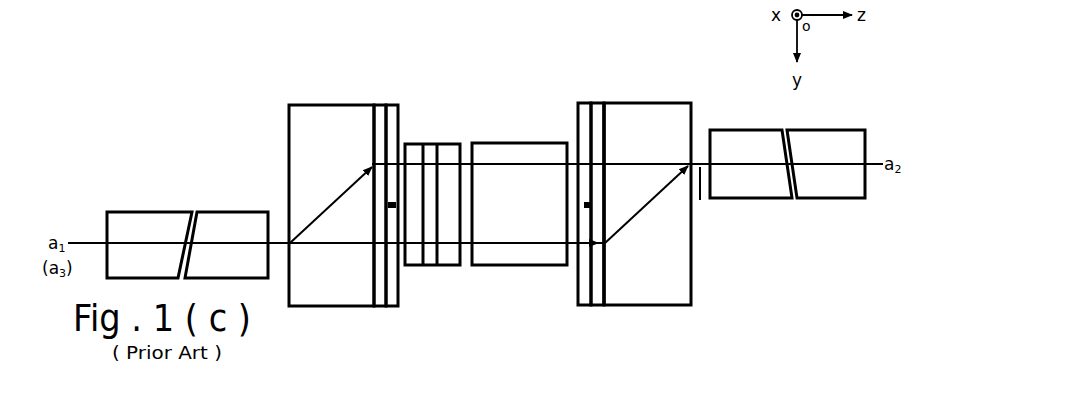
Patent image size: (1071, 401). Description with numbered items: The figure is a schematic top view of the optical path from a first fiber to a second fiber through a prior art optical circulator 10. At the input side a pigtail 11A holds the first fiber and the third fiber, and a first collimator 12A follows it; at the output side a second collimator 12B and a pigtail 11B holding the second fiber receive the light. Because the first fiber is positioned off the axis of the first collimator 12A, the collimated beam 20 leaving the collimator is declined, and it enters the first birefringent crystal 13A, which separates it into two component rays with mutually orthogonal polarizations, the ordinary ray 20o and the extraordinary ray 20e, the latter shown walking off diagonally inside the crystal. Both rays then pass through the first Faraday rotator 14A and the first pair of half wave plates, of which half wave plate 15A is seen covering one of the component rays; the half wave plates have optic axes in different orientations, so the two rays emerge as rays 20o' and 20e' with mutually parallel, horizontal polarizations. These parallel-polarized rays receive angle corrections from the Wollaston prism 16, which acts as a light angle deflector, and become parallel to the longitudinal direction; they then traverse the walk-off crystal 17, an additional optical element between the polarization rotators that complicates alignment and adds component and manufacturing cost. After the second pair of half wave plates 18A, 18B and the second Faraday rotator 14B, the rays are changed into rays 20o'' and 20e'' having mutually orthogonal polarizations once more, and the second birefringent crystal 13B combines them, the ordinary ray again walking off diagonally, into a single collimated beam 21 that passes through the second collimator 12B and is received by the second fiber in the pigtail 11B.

The optical circulator 10 is at (117, 108).
The pigtail 11A is at (160, 211).
The first collimator 12A is at (223, 211).
The first birefringent crystal 13A is at (319, 104).
The first Faraday rotator 14A is at (378, 104).
The half wave plate of first pair 15A is at (399, 105).
The Wollaston prism 16 is at (452, 143).
The walk-off crystal 17 is at (515, 143).
The half wave plate of second pair 18A is at (577, 112).
The half wave plate of second pair 18B is at (580, 293).
The second Faraday rotator 14B is at (602, 103).
The second birefringent crystal 13B is at (647, 102).
The second collimator 12B is at (745, 129).
The pigtail 11B is at (825, 129).
The collimated beam 20 is at (289, 236).
The collimated beam 21 is at (700, 200).
The extraordinary ray 20e is at (331, 204).
The ordinary ray 20o is at (336, 257).
The extraordinary ray with parallel polarization 20e' is at (426, 126).
The ordinary ray with parallel polarization 20o' is at (436, 274).
The extraordinary ray with orthogonal polarization 20e'' is at (627, 150).
The ordinary ray with orthogonal polarization 20o'' is at (646, 206).